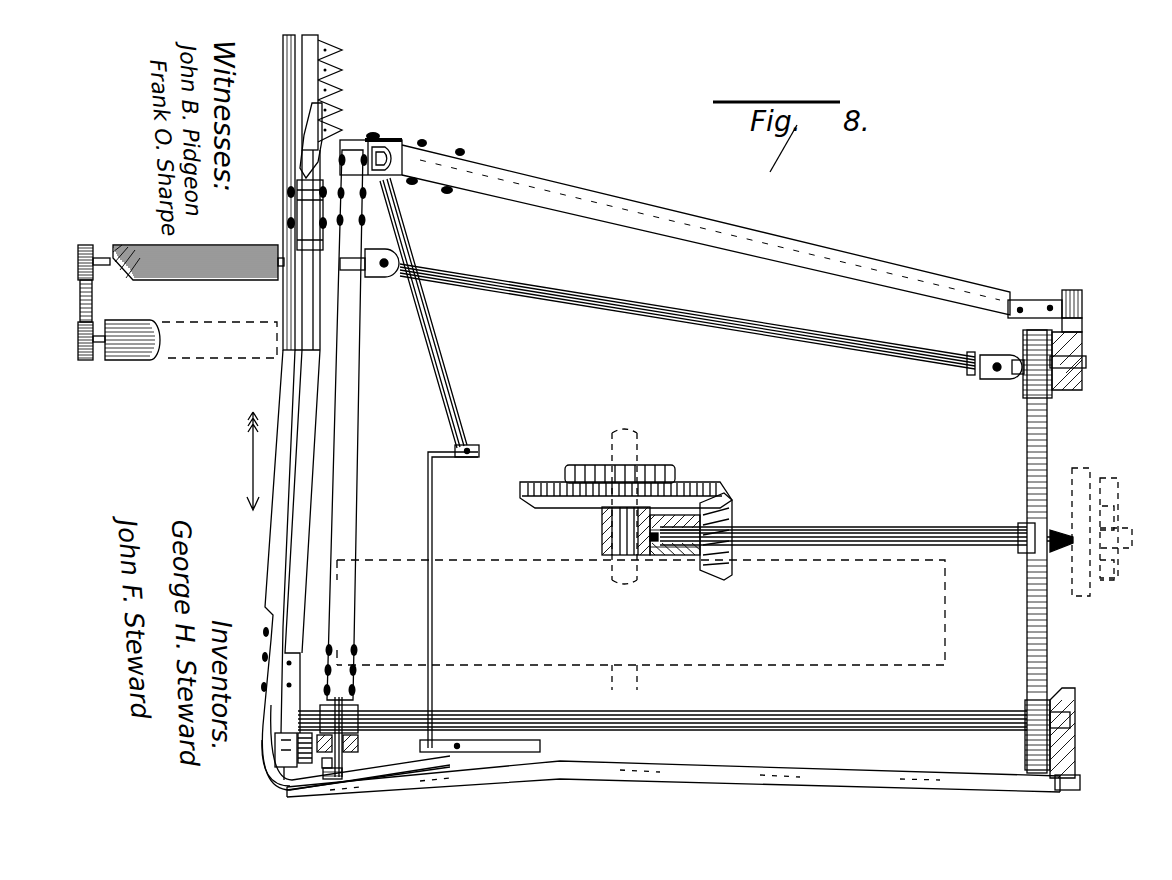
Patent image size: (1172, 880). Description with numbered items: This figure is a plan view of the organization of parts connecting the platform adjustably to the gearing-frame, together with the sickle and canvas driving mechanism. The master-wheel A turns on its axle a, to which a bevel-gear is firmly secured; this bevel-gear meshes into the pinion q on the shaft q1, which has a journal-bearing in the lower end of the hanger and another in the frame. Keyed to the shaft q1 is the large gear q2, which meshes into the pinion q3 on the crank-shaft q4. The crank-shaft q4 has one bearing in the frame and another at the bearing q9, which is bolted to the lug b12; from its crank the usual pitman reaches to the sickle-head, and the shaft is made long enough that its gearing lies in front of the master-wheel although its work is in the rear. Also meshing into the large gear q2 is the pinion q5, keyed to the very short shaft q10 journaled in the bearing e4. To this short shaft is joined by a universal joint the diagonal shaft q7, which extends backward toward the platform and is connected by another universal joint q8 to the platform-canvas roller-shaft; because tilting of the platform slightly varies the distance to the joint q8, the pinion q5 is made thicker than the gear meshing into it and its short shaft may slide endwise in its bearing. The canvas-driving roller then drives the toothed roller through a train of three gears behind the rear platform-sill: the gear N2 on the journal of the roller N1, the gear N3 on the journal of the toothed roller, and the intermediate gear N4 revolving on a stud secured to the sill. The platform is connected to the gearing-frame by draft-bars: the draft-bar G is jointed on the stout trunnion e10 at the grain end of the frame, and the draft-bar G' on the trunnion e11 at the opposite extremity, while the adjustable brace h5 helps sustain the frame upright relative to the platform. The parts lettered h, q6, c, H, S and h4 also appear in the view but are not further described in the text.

The draft-bar G is at (675, 223).
The draft-bar G' is at (673, 773).
The diagonal shaft q7 is at (687, 316).
The universal joint q8 is at (369, 276).
The link arm h is at (460, 465).
The pinion q is at (727, 531).
The axle a is at (637, 486).
The shaft q1 is at (866, 526).
The large gear q2 is at (1015, 551).
The pinion q3 is at (1024, 724).
The crank-shaft q4 is at (662, 704).
The pinion q5 is at (1022, 380).
The upper gear q6 is at (1035, 378).
The bearing q9 is at (355, 718).
The short shaft q10 is at (1086, 363).
The gear hub c is at (600, 528).
The master-wheel A is at (626, 540).
The frame outline H is at (641, 612).
The bearing support S is at (1112, 592).
The bearing e4 is at (1083, 350).
The trunnion e10 is at (1062, 299).
The trunnion e11 is at (1080, 780).
The lug b12 is at (352, 757).
The adjustable brace h5 is at (333, 784).
The loop link h4 is at (274, 780).
The roller N1 is at (198, 278).
The gear N2 is at (77, 262).
The gear N3 is at (101, 340).
The intermediate gear N4 is at (68, 301).